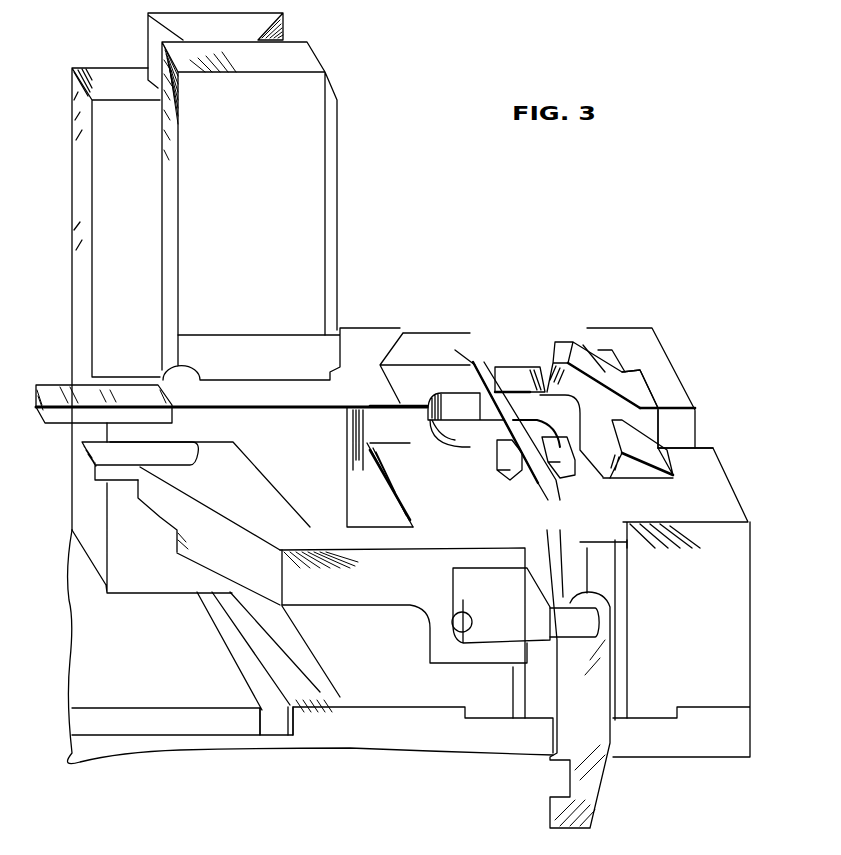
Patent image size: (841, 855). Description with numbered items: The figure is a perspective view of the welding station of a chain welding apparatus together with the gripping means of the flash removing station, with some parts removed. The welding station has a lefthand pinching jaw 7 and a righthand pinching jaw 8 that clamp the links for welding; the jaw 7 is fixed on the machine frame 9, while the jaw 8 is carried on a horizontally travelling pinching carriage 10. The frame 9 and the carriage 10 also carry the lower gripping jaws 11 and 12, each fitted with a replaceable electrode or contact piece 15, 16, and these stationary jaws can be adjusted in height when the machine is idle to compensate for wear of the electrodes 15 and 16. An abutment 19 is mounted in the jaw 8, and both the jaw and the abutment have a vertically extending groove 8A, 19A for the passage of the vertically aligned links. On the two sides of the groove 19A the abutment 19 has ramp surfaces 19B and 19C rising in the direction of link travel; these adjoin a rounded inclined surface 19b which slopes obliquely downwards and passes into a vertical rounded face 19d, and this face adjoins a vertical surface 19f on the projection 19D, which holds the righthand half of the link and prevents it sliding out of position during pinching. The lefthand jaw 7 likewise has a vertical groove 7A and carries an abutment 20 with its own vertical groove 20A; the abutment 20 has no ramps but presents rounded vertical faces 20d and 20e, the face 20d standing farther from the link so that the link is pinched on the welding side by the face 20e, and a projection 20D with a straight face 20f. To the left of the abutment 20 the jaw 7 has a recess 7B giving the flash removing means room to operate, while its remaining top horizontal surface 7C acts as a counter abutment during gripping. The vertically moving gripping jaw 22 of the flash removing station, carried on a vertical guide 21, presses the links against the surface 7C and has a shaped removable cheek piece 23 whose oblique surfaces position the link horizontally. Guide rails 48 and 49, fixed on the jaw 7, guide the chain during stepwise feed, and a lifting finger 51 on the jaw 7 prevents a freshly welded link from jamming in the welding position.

The lefthand pinching jaw 7 is at (442, 538).
The vertical groove 7A is at (353, 433).
The recess 7B is at (277, 478).
The top horizontal surface 7C is at (268, 398).
The righthand pinching jaw 8 is at (665, 375).
The vertically extending groove 8A is at (693, 420).
The machine frame 9 is at (428, 745).
The pinching carriage 10 is at (722, 745).
The lower gripping jaw 11 is at (521, 712).
The lower gripping jaw 12 is at (618, 590).
The contact piece 15 is at (510, 487).
The contact piece 16 is at (577, 487).
The abutment 19 is at (660, 352).
The vertically extending groove 19A is at (685, 400).
The ramp surface 19B is at (635, 350).
The ramp surface 19C is at (650, 480).
The projection 19D is at (512, 345).
The rounded inclined surface 19b is at (565, 345).
The vertical rounded face 19d is at (590, 350).
The vertical surface 19f is at (485, 378).
The abutment 20 is at (393, 363).
The vertical groove 20A is at (412, 432).
The projection 20D is at (455, 350).
The rounded vertical face 20d is at (437, 405).
The rounded vertical face 20e is at (455, 465).
The straight face 20f is at (458, 400).
The vertical guide 21 is at (100, 184).
The gripping jaw 22 is at (313, 148).
The cheek piece 23 is at (327, 345).
The guide rail 48 is at (57, 390).
The guide rail 49 is at (97, 448).
The lifting finger 51 is at (598, 788).